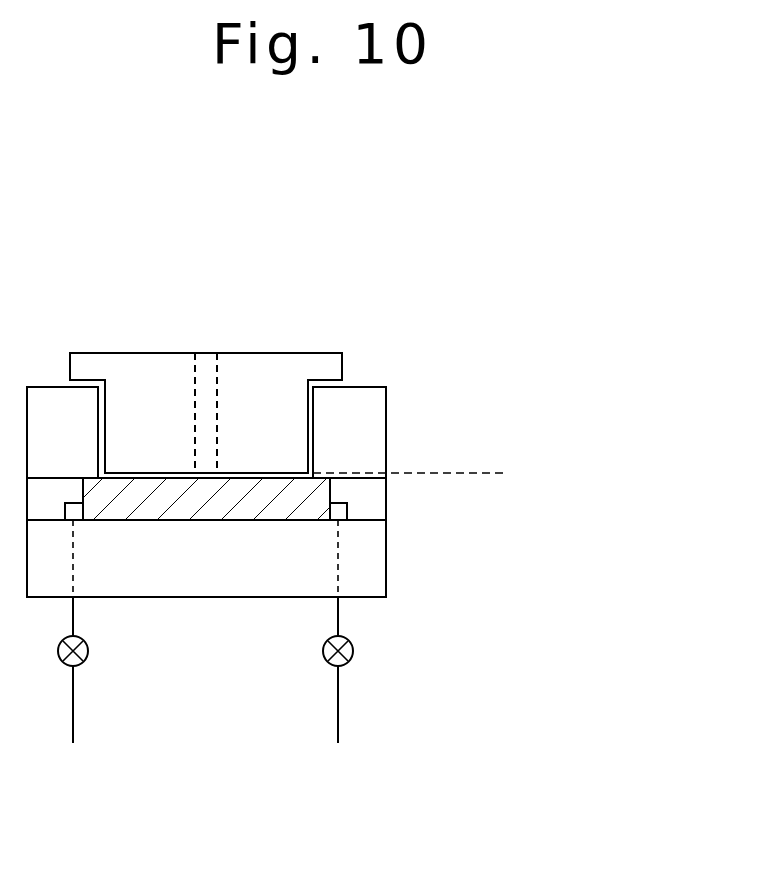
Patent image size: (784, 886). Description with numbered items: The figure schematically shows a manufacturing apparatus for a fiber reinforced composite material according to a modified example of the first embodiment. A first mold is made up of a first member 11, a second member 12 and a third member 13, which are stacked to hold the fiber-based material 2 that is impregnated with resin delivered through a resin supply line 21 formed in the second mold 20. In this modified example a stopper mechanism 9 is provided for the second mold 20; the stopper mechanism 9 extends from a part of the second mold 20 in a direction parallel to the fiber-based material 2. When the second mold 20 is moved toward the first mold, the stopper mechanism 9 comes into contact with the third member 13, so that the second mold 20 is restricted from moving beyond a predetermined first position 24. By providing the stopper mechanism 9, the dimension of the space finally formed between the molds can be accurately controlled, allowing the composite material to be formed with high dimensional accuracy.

The fiber-based material 2 is at (257, 500).
The stopper mechanism 9 is at (328, 368).
The first member 11 is at (373, 557).
The second member 12 is at (373, 512).
The third member 13 is at (373, 458).
The second mold 20 is at (278, 367).
The resin supply line 21 is at (195, 367).
The first position 24 is at (488, 472).